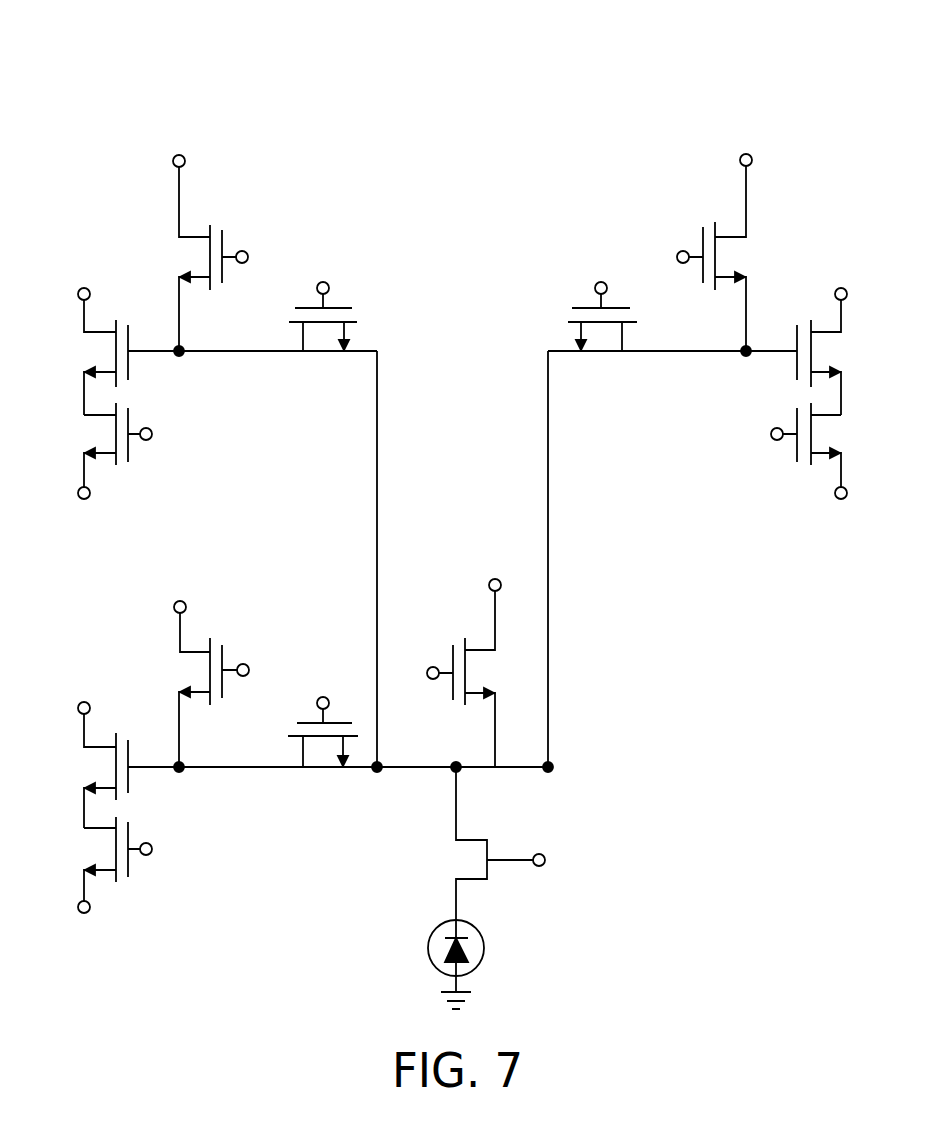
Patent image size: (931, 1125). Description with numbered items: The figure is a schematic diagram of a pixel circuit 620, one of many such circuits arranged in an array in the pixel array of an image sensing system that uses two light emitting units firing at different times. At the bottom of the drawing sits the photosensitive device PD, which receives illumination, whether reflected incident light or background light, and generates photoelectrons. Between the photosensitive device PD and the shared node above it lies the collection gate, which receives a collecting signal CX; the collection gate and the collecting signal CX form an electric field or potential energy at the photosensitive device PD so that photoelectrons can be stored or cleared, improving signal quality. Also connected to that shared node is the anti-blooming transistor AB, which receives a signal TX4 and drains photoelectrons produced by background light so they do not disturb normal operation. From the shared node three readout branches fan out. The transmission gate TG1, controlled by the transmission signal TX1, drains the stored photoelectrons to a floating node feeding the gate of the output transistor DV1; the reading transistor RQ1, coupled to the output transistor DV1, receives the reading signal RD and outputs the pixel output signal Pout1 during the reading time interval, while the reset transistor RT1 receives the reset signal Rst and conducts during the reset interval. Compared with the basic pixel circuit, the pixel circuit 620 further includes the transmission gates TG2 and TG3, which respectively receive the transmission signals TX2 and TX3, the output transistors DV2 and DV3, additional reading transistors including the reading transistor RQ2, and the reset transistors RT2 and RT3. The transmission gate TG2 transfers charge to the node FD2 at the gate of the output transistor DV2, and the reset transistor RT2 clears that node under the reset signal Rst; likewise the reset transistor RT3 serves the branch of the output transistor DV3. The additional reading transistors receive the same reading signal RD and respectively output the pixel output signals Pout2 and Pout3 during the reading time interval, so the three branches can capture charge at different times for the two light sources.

The pixel circuit 620 is at (740, 105).
The reset transistor RT1 is at (183, 253).
The reset transistor RT2 is at (746, 252).
The reset transistor RT3 is at (185, 684).
The output transistor DV1 is at (86, 351).
The output transistor DV2 is at (847, 351).
The output transistor DV3 is at (87, 765).
The reading transistor RQ1 is at (83, 658).
The reading transistor RQ2 is at (837, 451).
The transmission signal TX1 is at (323, 301).
The transmission signal TX2 is at (602, 301).
The transmission signal TX3 is at (323, 718).
The signal TX4 is at (416, 659).
The transmission gate TG1 is at (324, 379).
The transmission gate TG2 is at (604, 369).
The transmission gate TG3 is at (325, 784).
The node FD2 is at (686, 339).
The anti-blooming transistor AB is at (483, 673).
The collecting signal CX is at (526, 843).
The photosensitive device PD is at (483, 957).
The reset signal Rst is at (462, 448).
The reading signal RD is at (461, 644).
The pixel output signal Pout1 is at (85, 518).
The pixel output signal Pout2 is at (840, 518).
The pixel output signal Pout3 is at (87, 934).